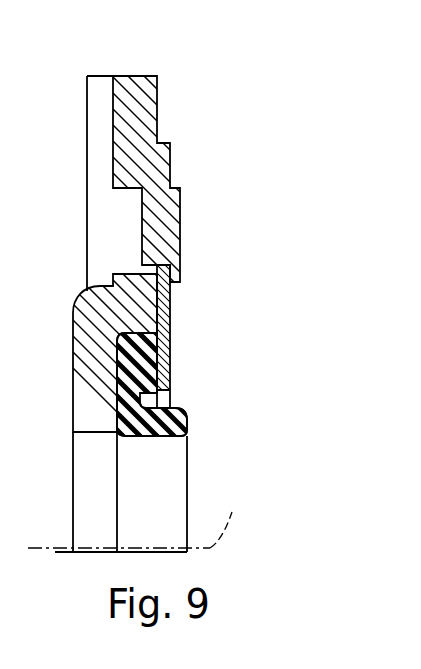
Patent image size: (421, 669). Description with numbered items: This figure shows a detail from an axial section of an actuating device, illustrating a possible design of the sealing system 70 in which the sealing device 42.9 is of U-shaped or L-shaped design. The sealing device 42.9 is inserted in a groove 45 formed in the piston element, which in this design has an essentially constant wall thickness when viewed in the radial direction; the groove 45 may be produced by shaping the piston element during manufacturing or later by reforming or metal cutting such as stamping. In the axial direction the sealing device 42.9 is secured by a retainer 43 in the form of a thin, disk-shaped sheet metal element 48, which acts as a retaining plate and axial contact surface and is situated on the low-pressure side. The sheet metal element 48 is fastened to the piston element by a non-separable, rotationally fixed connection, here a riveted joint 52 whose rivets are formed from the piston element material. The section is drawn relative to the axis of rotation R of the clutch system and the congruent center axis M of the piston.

The sealing system 70 is at (192, 325).
The riveted joint 52 is at (166, 246).
The retainer 43 is at (210, 334).
The sheet metal element 48 is at (165, 305).
The groove 45 is at (152, 350).
The sealing device 42.9 is at (142, 368).
The axis of rotation R is at (142, 516).
The center axis M is at (142, 516).